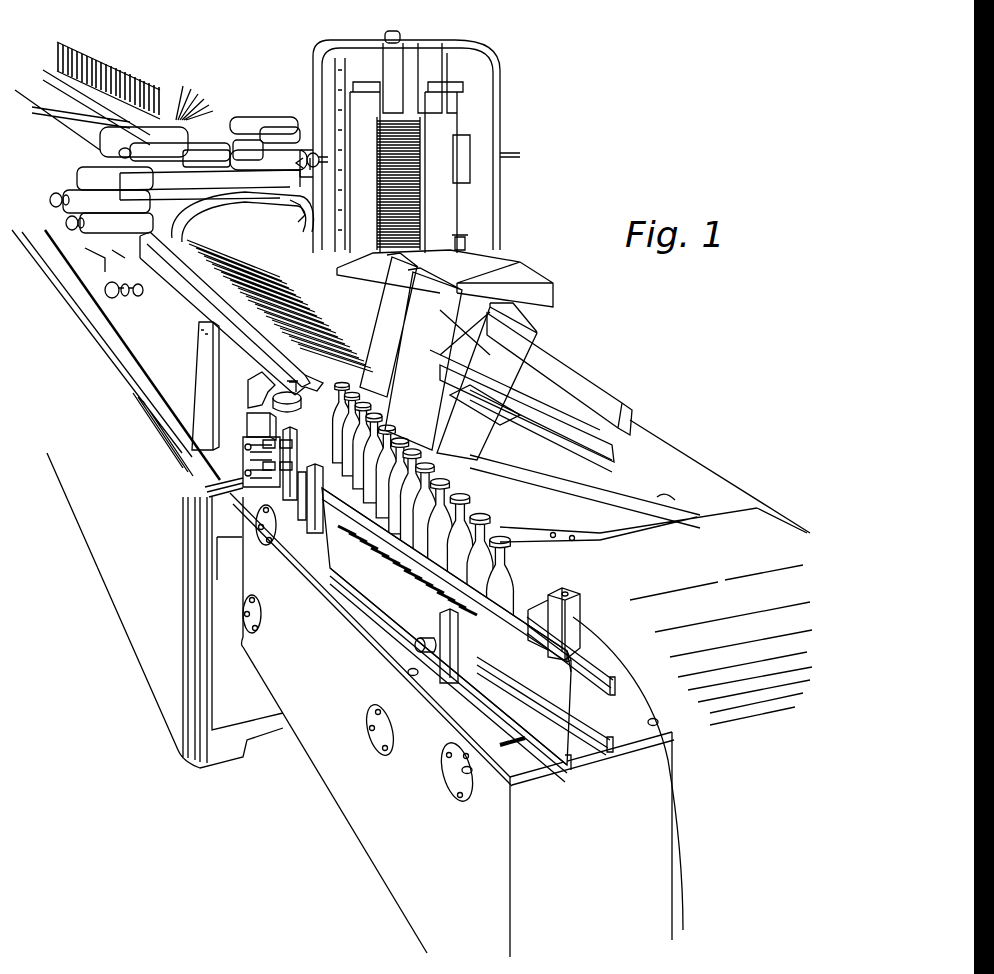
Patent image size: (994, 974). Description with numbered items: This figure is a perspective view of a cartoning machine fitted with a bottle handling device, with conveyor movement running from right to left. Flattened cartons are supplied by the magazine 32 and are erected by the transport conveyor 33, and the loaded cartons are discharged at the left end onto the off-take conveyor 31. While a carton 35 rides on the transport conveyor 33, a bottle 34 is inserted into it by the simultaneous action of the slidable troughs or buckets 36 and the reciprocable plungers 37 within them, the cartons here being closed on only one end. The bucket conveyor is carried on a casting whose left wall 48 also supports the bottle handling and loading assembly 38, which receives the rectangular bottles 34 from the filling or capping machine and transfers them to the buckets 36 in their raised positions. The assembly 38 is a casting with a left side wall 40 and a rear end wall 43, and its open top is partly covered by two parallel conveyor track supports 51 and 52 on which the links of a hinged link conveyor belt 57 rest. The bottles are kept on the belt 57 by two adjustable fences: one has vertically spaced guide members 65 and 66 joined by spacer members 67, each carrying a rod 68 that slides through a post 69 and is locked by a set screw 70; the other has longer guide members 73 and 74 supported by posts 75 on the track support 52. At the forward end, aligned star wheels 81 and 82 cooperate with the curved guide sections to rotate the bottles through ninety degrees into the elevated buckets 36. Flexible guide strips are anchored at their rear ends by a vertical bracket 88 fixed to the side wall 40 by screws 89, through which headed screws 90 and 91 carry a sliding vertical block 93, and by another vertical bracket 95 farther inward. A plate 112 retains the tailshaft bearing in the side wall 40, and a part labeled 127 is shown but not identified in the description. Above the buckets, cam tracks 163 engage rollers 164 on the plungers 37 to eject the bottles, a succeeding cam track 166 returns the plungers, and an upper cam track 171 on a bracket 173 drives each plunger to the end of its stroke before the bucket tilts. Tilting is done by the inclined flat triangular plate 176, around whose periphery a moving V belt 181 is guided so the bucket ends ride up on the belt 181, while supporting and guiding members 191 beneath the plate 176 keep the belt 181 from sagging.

The off-take conveyor 31 is at (77, 121).
The magazine 32 is at (500, 137).
The transport conveyor 33 is at (270, 110).
The bottle 34 is at (240, 267).
The carton 35 is at (172, 97).
The troughs or buckets 36 is at (618, 446).
The reciprocable plungers 37 is at (260, 326).
The bottle handling and loading assembly 38 is at (296, 764).
The left side wall 40 is at (370, 850).
The rear end wall 43 is at (512, 845).
The left wall 48 is at (158, 372).
The conveyor track support 51 is at (500, 754).
The conveyor track support 52 is at (672, 734).
The hinged link conveyor belt 57 is at (587, 729).
The guide member 65 is at (610, 650).
The guide member 66 is at (513, 705).
The spacer members 67 is at (333, 552).
The rod 68 is at (418, 652).
The post 69 is at (315, 535).
The set screws 70 is at (572, 594).
The guide member 73 is at (612, 672).
The guide member 74 is at (602, 745).
The posts 75 is at (578, 614).
The star wheel 81 is at (256, 435).
The star wheel 82 is at (262, 407).
The vertical bracket 88 is at (264, 537).
The screws 89 is at (275, 502).
The headed screw 90 is at (245, 484).
The headed screw 91 is at (242, 453).
The vertical block 93 is at (246, 466).
The vertical bracket 95 is at (303, 527).
The plate 112 is at (393, 752).
The knob 127 is at (265, 385).
The cam tracks 163 is at (158, 275).
The rollers 164 is at (301, 335).
The cam track 166 is at (198, 174).
The upper cam track 171 is at (560, 541).
The bracket 173 is at (540, 517).
The flat triangular plate 176 is at (548, 394).
The V belt 181 is at (582, 406).
The supporting and guiding members 191 is at (520, 415).